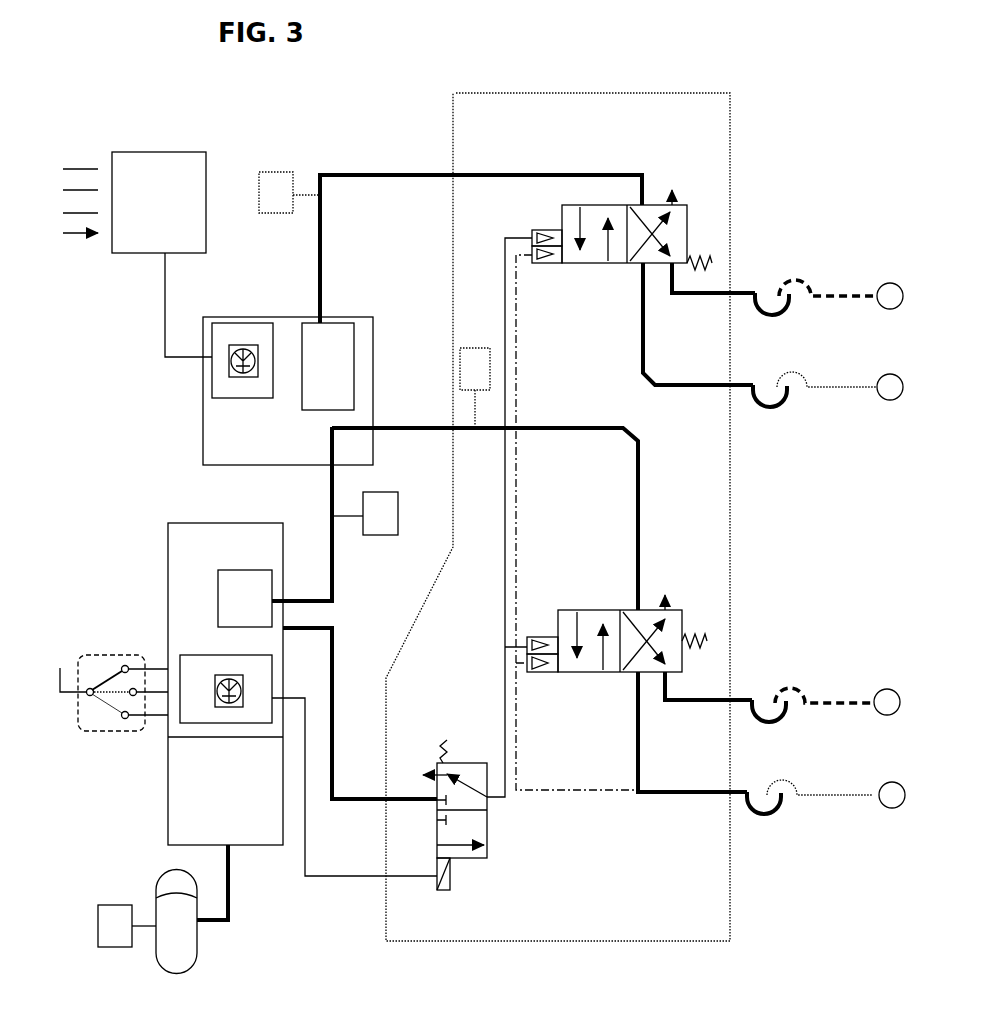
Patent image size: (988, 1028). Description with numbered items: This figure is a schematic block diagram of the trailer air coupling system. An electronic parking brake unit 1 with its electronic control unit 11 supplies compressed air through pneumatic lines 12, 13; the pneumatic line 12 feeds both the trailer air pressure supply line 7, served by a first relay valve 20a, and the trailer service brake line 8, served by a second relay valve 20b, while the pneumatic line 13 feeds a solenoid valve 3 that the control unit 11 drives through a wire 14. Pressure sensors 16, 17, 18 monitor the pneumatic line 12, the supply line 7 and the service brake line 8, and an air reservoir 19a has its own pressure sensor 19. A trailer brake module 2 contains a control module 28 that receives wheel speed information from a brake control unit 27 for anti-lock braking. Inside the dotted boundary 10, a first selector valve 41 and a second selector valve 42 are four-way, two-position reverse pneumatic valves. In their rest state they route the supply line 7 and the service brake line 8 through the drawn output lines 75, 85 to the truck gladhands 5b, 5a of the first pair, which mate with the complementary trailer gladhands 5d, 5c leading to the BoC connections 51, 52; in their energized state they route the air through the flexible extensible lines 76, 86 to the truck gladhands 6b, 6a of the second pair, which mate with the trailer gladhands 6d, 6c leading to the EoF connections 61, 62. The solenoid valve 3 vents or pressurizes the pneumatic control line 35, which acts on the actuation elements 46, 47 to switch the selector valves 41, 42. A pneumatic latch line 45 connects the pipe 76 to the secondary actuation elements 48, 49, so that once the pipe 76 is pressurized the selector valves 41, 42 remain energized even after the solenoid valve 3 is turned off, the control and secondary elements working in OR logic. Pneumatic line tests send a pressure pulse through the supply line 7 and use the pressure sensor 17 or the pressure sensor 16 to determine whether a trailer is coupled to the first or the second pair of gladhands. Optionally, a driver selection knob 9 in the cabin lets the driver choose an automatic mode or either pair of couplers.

The electronic parking brake unit 1 is at (165, 518).
The trailer brake module 2 is at (277, 316).
The solenoid valve 3 is at (496, 823).
The gladhand coupler 5a is at (775, 306).
The gladhand coupler 5b is at (770, 710).
The complementary gladhand 5c is at (795, 283).
The complementary gladhand 5d is at (793, 688).
The gladhand coupler 6a is at (780, 404).
The gladhand coupler 6b is at (770, 813).
The complementary gladhand 6c is at (795, 388).
The complementary gladhand 6d is at (795, 797).
The trailer air pressure supply line 7 is at (647, 515).
The trailer service brake line 8 is at (586, 170).
The driver selection knob 9 is at (93, 650).
The trailer coupling valve unit 10 is at (738, 123).
The electronic control unit 11 is at (200, 652).
The pneumatic line 12 is at (334, 572).
The pneumatic line 13 is at (336, 718).
The wire 14 is at (330, 877).
The pressure sensor 16 is at (398, 516).
The pressure sensor 17 is at (460, 378).
The pressure sensor 18 is at (276, 172).
The pressure sensor 19 is at (98, 920).
The air reservoir 19a is at (197, 940).
The first relay valve 20a is at (248, 570).
The second relay valve 20b is at (333, 323).
The brake control unit 27 is at (162, 152).
The control module 28 is at (243, 323).
The pneumatic control line 35 is at (505, 718).
The first selector valve 41 is at (586, 683).
The second selector valve 42 is at (591, 272).
The pneumatic latch line 45 is at (541, 791).
The actuation element 46 is at (542, 230).
The actuation element 47 is at (542, 637).
The secondary actuation element 48 is at (552, 263).
The secondary actuation element 49 is at (545, 672).
The red line BoC connector 51 is at (884, 688).
The blue line BoC connector 52 is at (887, 282).
The red line EoF connector 61 is at (899, 785).
The blue line EoF connector 62 is at (899, 379).
The red line to BoC 75 is at (710, 703).
The flexible extensible pneumatic pipe 76 is at (698, 795).
The blue line to BoC 85 is at (718, 296).
The flexible extensible line 86 is at (713, 388).